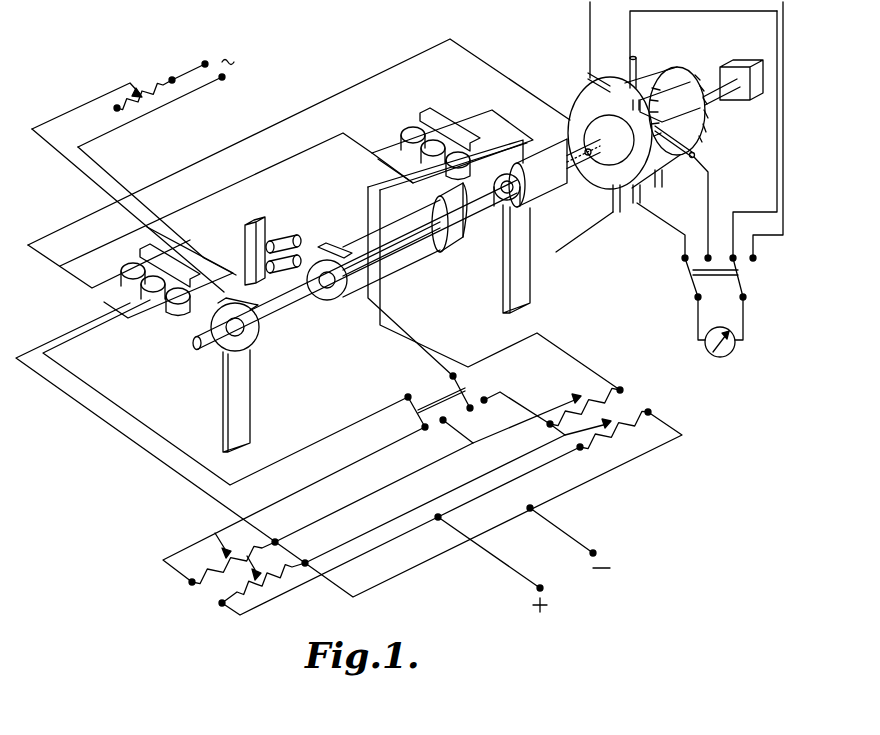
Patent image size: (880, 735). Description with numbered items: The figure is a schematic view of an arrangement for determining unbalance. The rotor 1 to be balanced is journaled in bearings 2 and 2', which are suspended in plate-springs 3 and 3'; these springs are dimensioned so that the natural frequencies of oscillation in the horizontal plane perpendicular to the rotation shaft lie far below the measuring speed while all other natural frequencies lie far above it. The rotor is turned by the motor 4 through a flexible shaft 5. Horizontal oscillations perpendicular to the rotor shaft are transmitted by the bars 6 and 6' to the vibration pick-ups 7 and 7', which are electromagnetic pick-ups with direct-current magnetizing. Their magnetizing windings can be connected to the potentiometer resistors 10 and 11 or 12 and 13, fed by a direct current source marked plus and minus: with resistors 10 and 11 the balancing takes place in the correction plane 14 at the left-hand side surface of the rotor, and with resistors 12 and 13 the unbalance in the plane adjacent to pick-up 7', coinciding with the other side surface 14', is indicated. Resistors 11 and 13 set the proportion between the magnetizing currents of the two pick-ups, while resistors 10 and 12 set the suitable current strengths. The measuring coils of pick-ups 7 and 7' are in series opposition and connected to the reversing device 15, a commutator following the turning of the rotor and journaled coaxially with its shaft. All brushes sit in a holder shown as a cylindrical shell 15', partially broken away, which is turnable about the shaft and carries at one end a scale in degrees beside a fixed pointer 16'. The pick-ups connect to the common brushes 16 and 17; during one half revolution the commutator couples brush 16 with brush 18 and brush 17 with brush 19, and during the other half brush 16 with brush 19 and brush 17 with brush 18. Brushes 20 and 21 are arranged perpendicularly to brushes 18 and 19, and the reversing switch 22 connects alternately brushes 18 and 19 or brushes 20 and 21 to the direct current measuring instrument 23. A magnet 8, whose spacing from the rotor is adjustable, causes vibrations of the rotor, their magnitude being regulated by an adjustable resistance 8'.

The rotor 1 is at (405, 260).
The bearing 2 is at (355, 267).
The bearing 2' is at (544, 173).
The plate-spring 3 is at (248, 401).
The plate-spring 3' is at (532, 259).
The motor 4 is at (742, 65).
The flexible shaft 5 is at (567, 150).
The bar 6 is at (227, 324).
The bar 6' is at (498, 186).
The vibration pick-up 7 is at (156, 273).
The vibration pick-up 7' is at (452, 137).
The magnet 8 is at (273, 246).
The adjustable resistance 8' is at (133, 100).
The potentiometer resistor 10 is at (236, 586).
The potentiometer resistor 11 is at (208, 567).
The potentiometer resistor 12 is at (648, 413).
The potentiometer resistor 13 is at (604, 395).
The correction plane 14 is at (329, 292).
The side surface of the rotor 14' is at (460, 225).
The reversing device 15 is at (607, 133).
The cylindrical shell 15' is at (662, 111).
The brush 16 is at (671, 187).
The fixed pointer 16' is at (678, 97).
The brush 17 is at (615, 212).
The brush 18 is at (637, 205).
The brush 19 is at (630, 60).
The brush 20 is at (700, 158).
The brush 21 is at (588, 80).
The reversing switch 22 is at (708, 270).
The direct current measuring instrument 23 is at (722, 358).